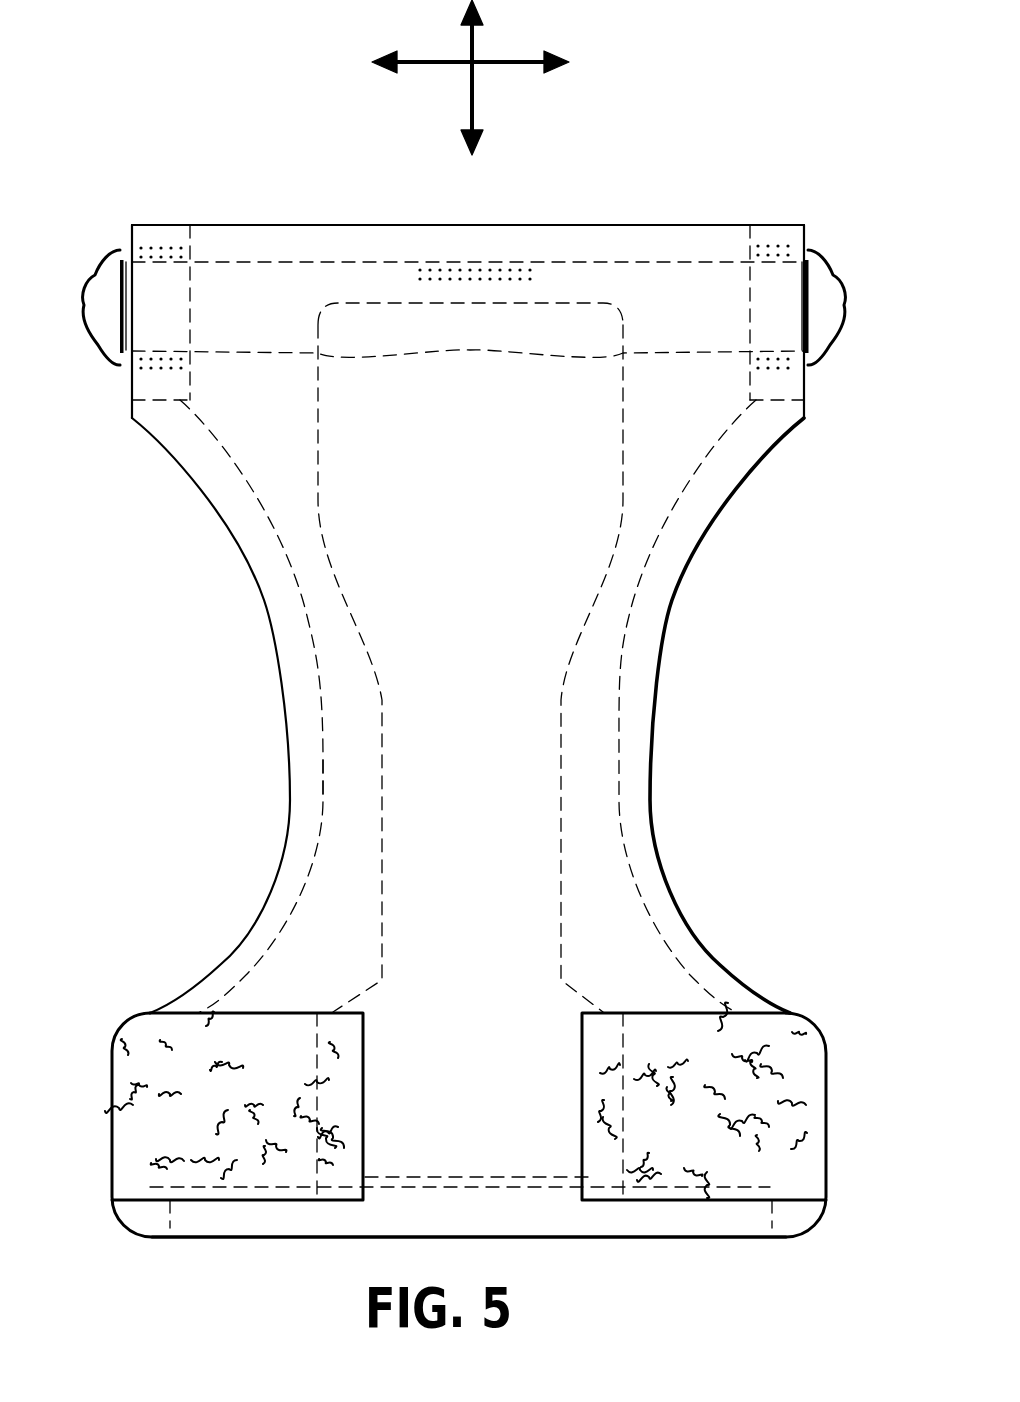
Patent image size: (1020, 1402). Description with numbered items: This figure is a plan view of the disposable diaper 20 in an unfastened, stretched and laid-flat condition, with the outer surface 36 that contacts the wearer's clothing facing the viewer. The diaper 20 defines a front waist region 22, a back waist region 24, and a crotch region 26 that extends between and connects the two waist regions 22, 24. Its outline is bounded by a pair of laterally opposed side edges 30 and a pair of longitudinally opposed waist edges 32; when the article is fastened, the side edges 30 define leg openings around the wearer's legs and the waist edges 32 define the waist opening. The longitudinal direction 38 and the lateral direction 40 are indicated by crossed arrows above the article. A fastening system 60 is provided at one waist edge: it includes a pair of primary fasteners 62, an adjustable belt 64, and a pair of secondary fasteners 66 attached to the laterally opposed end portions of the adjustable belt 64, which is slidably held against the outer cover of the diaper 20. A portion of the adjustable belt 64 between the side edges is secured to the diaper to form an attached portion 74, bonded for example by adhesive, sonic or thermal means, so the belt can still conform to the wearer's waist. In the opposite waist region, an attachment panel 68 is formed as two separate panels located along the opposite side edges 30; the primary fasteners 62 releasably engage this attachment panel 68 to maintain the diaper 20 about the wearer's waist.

The disposable diaper 20 is at (228, 100).
The front waist region 22 is at (868, 1047).
The back waist region 24 is at (838, 500).
The crotch region 26 is at (800, 718).
The side edges 30 is at (262, 603).
The waist edges 32 is at (310, 222).
The outer surface 36 is at (435, 690).
The longitudinal direction 38 is at (478, 42).
The lateral direction 40 is at (505, 68).
The fastening system 60 is at (828, 188).
The primary fasteners 62 is at (155, 250).
The adjustable belt 64 is at (810, 360).
The secondary fasteners 66 is at (108, 270).
The attachment panel 68 is at (227, 1013).
The attached portion 74 is at (510, 268).